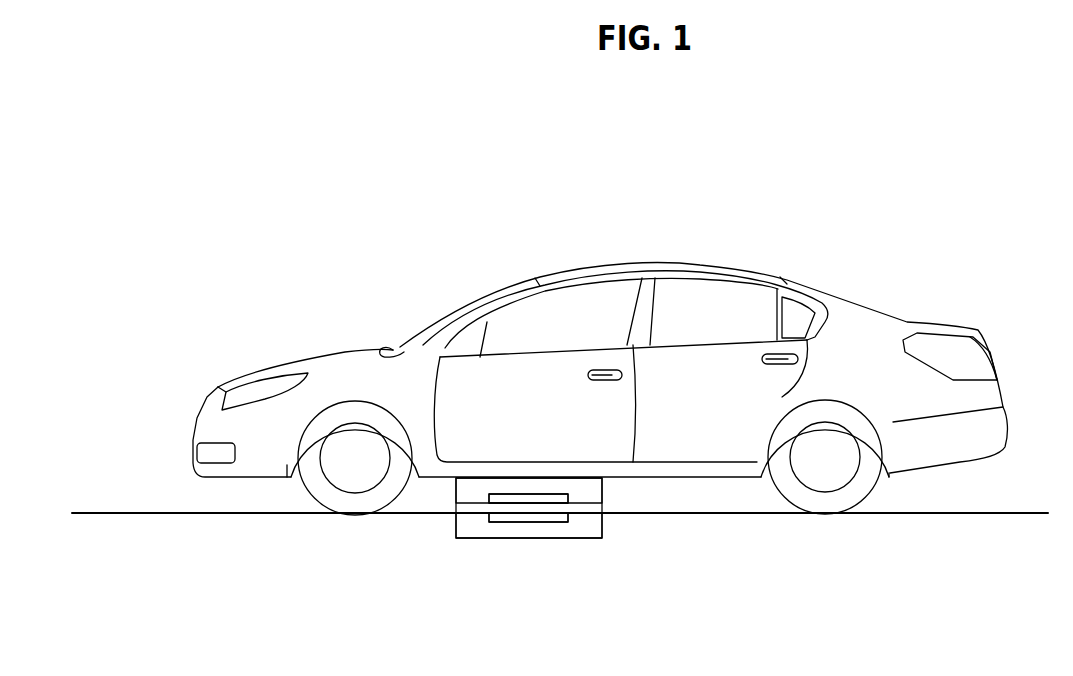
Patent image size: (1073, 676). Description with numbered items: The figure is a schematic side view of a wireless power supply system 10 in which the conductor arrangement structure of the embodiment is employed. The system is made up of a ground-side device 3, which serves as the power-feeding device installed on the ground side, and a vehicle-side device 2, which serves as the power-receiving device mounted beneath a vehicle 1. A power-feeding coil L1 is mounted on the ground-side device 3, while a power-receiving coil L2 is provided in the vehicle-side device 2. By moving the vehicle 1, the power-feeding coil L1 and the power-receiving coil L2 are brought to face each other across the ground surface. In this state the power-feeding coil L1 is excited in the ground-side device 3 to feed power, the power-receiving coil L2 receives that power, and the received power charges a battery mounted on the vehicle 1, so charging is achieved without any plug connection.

The vehicle 1 is at (685, 263).
The vehicle-side device 2 is at (603, 490).
The ground-side device 3 is at (580, 538).
The wireless power supply system 10 is at (678, 535).
The power-feeding coil L1 is at (538, 518).
The power-receiving coil L2 is at (498, 500).